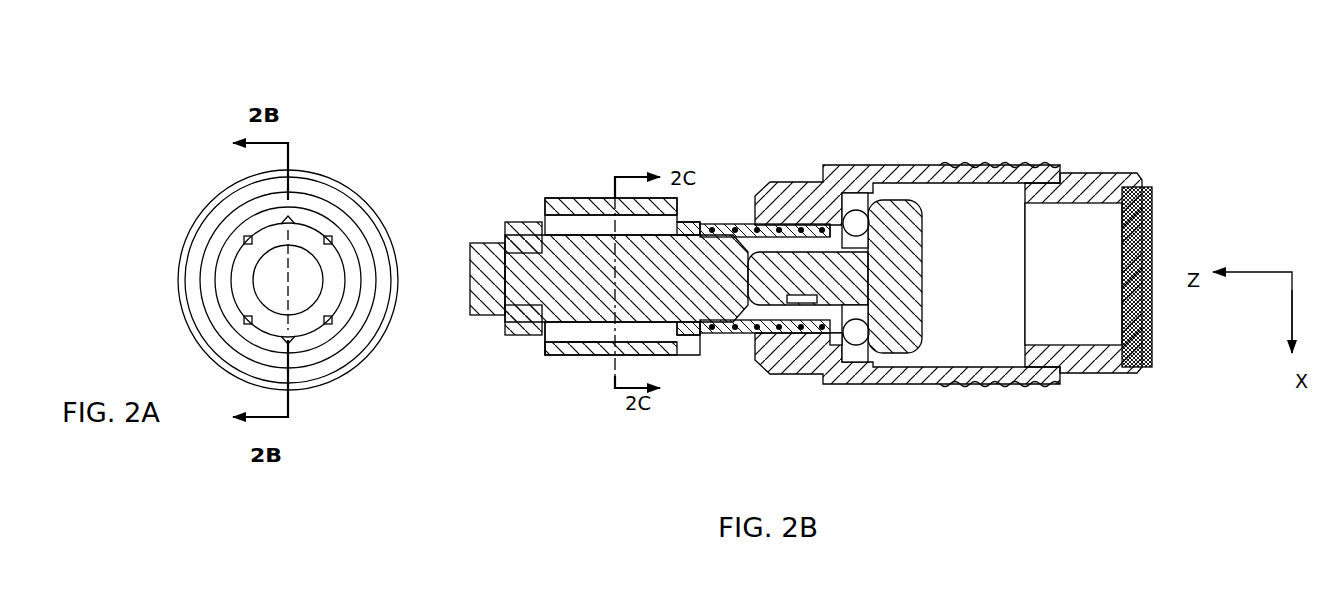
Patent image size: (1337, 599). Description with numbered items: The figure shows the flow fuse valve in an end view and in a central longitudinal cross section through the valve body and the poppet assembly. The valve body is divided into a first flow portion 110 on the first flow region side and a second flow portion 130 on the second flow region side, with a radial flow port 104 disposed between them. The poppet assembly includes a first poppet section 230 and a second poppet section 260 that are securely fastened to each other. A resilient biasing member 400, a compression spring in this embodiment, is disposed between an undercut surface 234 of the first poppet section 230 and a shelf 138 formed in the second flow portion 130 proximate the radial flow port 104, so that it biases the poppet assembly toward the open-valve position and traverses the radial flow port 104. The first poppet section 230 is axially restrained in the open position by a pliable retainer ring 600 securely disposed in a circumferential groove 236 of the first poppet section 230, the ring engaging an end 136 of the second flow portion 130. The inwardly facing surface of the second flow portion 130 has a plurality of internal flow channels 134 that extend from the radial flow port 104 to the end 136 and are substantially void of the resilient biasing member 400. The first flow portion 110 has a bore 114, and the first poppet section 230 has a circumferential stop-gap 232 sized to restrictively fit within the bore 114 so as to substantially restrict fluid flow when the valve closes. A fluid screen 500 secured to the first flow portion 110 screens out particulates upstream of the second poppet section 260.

The second flow portion 130 is at (587, 197).
The pliable retainer ring 600 is at (523, 222).
The circumferential groove 236 is at (526, 254).
The radial flow port 104 is at (722, 199).
The resilient biasing member 400 is at (733, 224).
The undercut surface 234 is at (817, 229).
The second poppet section 260 is at (917, 250).
The fluid screen 500 is at (1150, 267).
The first poppet section 230 is at (465, 307).
The end 136 is at (542, 347).
The internal flow channels 134 is at (595, 343).
The shelf 138 is at (698, 333).
The bore 114 is at (778, 335).
The circumferential stop-gap 232 is at (838, 333).
The first flow portion 110 is at (922, 387).